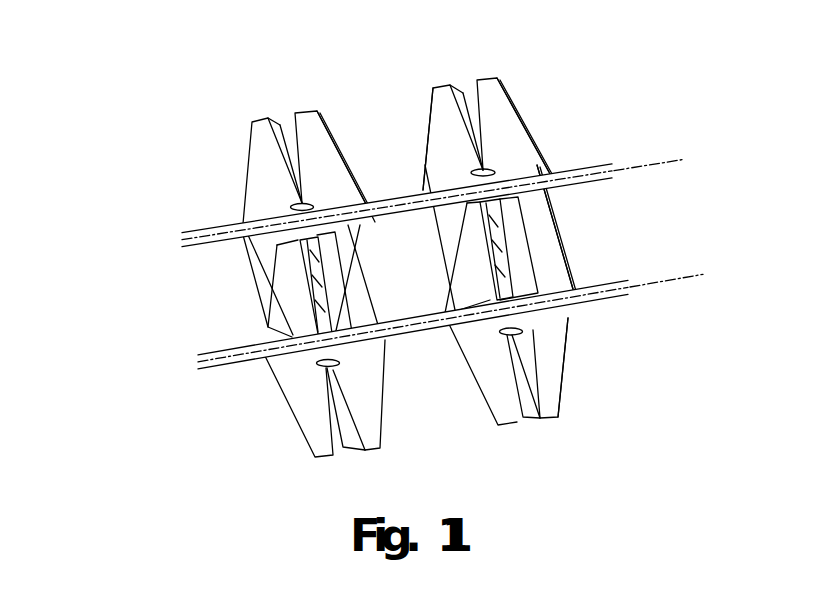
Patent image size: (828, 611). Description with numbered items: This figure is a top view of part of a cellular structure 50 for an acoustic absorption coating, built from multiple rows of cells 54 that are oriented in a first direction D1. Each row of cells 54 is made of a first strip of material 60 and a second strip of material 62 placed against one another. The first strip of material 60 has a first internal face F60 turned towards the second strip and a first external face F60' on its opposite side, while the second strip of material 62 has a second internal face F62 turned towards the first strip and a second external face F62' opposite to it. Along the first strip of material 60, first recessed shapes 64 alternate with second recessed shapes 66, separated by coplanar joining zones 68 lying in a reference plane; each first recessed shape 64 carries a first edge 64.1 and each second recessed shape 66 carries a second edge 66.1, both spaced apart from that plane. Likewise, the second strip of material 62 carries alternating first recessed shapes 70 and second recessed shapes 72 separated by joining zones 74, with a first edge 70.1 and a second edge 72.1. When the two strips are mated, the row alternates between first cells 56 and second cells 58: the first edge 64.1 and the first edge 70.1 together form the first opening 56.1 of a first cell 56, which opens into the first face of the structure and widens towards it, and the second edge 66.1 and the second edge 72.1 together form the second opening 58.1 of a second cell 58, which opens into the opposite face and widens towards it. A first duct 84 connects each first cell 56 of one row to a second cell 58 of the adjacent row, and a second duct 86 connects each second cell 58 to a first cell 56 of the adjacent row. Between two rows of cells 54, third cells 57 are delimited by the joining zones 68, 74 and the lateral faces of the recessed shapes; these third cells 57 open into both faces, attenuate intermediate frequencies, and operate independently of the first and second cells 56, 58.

The cellular structure 50 is at (76, 124).
The row of cells 54 is at (336, 278).
The first cell 56 is at (440, 243).
The first opening 56.1 is at (496, 243).
The third cell 57 is at (429, 385).
The second cell 58 is at (390, 252).
The second opening 58.1 is at (490, 270).
The first strip of material 60 is at (135, 250).
The second strip of material 62 is at (235, 328).
The first recessed shape 64 is at (339, 166).
The first edge 64.1 is at (302, 130).
The second recessed shape 66 is at (451, 171).
The second edge 66.1 is at (515, 132).
The joining zone 68 is at (406, 148).
The first recessed shape 70 is at (373, 244).
The first edge 70.1 is at (400, 291).
The second recessed shape 72 is at (543, 239).
The second edge 72.1 is at (598, 230).
The joining zone 74 is at (431, 296).
The first duct 84 is at (266, 285).
The second duct 86 is at (554, 249).
The first direction D1 is at (692, 227).
The first internal face F60 is at (128, 274).
The first external face F60' is at (126, 221).
The second internal face F62 is at (212, 195).
The second external face F62' is at (183, 316).